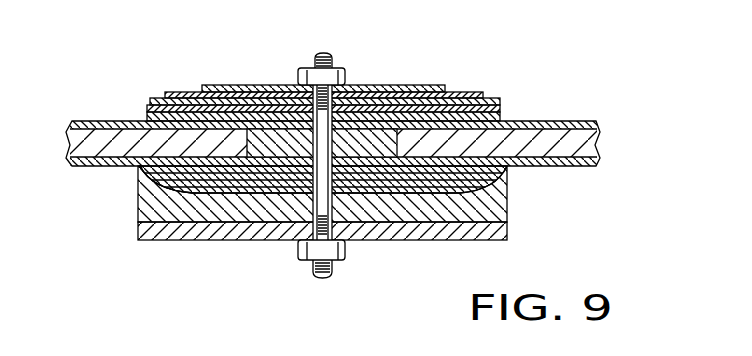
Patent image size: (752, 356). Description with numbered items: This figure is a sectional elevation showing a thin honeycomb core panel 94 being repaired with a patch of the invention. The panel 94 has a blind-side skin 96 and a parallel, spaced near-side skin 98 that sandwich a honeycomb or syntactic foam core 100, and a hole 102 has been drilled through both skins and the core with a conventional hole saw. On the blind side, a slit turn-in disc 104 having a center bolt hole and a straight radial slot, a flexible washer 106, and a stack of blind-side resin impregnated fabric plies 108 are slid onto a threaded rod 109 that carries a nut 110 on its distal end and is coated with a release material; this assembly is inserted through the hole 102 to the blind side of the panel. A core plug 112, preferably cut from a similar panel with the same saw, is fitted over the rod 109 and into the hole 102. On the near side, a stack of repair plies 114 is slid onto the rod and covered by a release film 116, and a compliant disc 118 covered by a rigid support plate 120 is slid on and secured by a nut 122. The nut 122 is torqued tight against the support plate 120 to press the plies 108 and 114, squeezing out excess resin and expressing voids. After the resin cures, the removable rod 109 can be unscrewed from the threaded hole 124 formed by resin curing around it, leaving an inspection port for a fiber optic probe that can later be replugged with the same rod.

The panel 94 is at (112, 104).
The blind-side skin 96 is at (578, 121).
The near-side skin 98 is at (574, 168).
The core 100 is at (596, 142).
The hole 102 is at (253, 121).
The turn-in disc 104 is at (402, 85).
The flexible washer 106 is at (470, 92).
The blind-side resin impregnated fabric plies 108 is at (501, 108).
The threaded rod 109 is at (328, 52).
The nut 110 is at (347, 72).
The core plug 112 is at (280, 135).
The repair plies 114 is at (492, 188).
The release film 116 is at (138, 168).
The compliant disc 118 is at (139, 204).
The rigid support plate 120 is at (177, 232).
The nut 122 is at (345, 254).
The threaded hole 124 is at (293, 225).